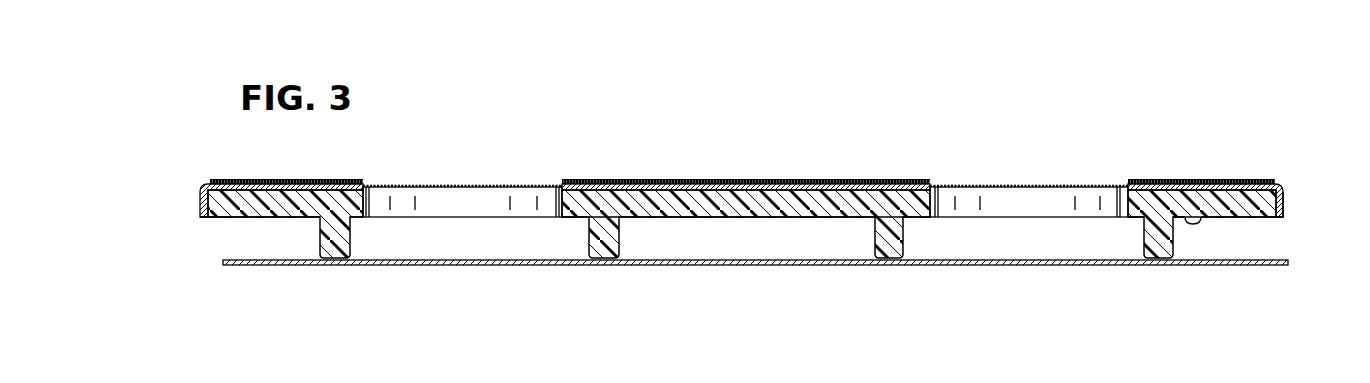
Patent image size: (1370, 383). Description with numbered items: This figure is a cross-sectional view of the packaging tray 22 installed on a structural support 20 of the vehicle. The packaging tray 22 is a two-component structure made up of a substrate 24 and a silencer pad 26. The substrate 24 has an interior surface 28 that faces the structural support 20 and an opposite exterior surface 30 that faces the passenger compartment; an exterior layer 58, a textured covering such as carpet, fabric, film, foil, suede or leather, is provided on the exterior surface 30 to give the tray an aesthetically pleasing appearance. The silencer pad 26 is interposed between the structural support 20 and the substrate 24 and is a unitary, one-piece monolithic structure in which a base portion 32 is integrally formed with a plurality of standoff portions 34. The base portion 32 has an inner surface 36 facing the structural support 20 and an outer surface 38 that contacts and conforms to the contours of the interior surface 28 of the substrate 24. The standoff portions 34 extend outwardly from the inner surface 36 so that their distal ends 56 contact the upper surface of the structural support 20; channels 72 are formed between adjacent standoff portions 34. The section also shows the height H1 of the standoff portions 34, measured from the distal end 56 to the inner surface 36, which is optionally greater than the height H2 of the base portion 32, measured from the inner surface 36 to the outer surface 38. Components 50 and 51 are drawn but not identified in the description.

The structural support 20 is at (1227, 264).
The packaging tray 22 is at (1167, 90).
The substrate 24 is at (690, 181).
The silencer pad 26 is at (1257, 227).
The interior surface 28 is at (848, 195).
The exterior surface 30 is at (760, 180).
The base portion 32 is at (1278, 186).
The standoff portions 34 is at (350, 238).
The inner surface 36 is at (1203, 215).
The outer surface 38 is at (1250, 180).
The component 50 is at (377, 186).
The component top surface 51 is at (1027, 186).
The distal ends 56 is at (333, 260).
The exterior layer 58 is at (607, 181).
The channels 72 is at (524, 248).
The height of standoff portions H1 is at (280, 217).
The height of base portion H2 is at (185, 243).